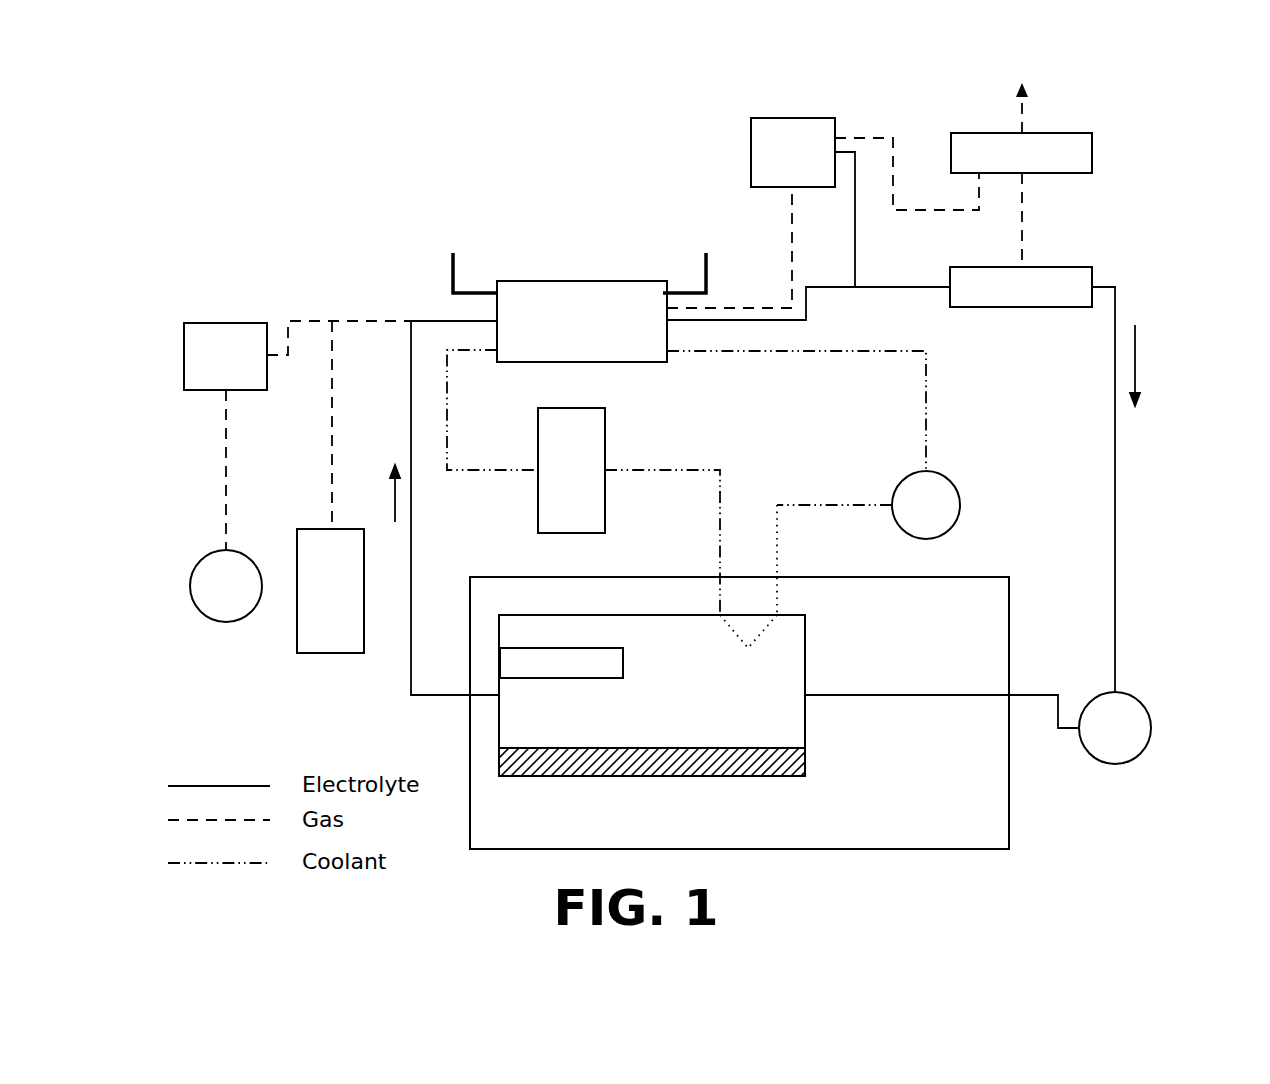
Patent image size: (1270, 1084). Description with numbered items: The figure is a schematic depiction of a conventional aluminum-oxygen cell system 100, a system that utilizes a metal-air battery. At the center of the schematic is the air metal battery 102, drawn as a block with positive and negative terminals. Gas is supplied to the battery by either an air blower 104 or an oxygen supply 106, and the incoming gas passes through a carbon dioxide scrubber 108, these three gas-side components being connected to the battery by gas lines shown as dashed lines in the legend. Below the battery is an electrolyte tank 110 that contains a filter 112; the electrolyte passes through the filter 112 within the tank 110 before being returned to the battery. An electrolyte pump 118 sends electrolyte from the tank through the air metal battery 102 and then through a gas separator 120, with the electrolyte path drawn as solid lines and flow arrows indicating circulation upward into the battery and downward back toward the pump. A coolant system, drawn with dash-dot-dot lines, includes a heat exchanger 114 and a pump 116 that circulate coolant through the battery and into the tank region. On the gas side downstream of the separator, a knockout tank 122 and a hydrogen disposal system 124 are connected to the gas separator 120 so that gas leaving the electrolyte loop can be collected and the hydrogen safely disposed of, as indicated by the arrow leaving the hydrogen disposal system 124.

The aluminum-oxygen cell system 100 is at (1145, 175).
The air metal battery 102 is at (578, 288).
The air blower 104 is at (226, 586).
The oxygen supply 106 is at (330, 591).
The carbon dioxide scrubber 108 is at (225, 356).
The electrolyte tank 110 is at (946, 597).
The filter 112 is at (803, 658).
The heat exchanger 114 is at (571, 470).
The pump 116 is at (926, 505).
The electrolyte pump 118 is at (1115, 728).
The gas separator 120 is at (1021, 287).
The knockout tank 122 is at (793, 152).
The hydrogen disposal system 124 is at (1021, 153).